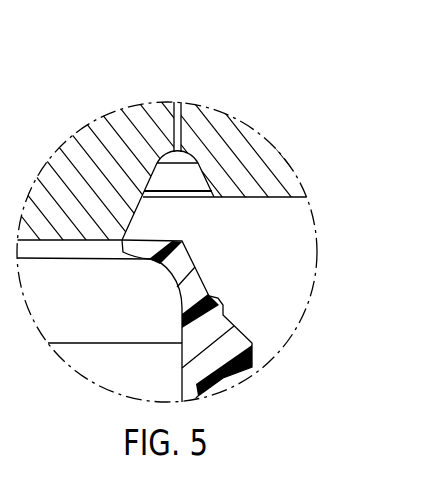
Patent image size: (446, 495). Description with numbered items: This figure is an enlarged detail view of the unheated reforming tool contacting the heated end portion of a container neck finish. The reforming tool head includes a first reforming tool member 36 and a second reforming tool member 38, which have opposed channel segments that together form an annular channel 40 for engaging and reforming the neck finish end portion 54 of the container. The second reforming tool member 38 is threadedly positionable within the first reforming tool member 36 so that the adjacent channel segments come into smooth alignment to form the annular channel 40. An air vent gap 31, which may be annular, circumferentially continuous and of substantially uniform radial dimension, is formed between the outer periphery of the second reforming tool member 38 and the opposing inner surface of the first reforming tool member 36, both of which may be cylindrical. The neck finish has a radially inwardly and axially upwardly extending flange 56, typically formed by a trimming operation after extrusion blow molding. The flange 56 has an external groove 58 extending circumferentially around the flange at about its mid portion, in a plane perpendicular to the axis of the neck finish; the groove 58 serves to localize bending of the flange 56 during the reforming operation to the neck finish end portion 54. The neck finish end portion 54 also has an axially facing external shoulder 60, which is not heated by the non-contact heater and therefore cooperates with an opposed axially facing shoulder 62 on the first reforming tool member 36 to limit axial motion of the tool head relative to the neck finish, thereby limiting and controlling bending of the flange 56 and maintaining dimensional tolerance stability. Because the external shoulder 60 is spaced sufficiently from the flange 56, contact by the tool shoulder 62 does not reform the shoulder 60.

The air vent gap 31 is at (178, 103).
The first reforming tool member 36 is at (200, 113).
The second reforming tool member 38 is at (102, 124).
The annular channel 40 is at (183, 164).
The neck finish end portion 54 is at (192, 285).
The flange 56 is at (173, 263).
The external groove 58 is at (190, 253).
The axially facing external shoulder 60 is at (206, 299).
The axially facing shoulder 62 is at (225, 200).